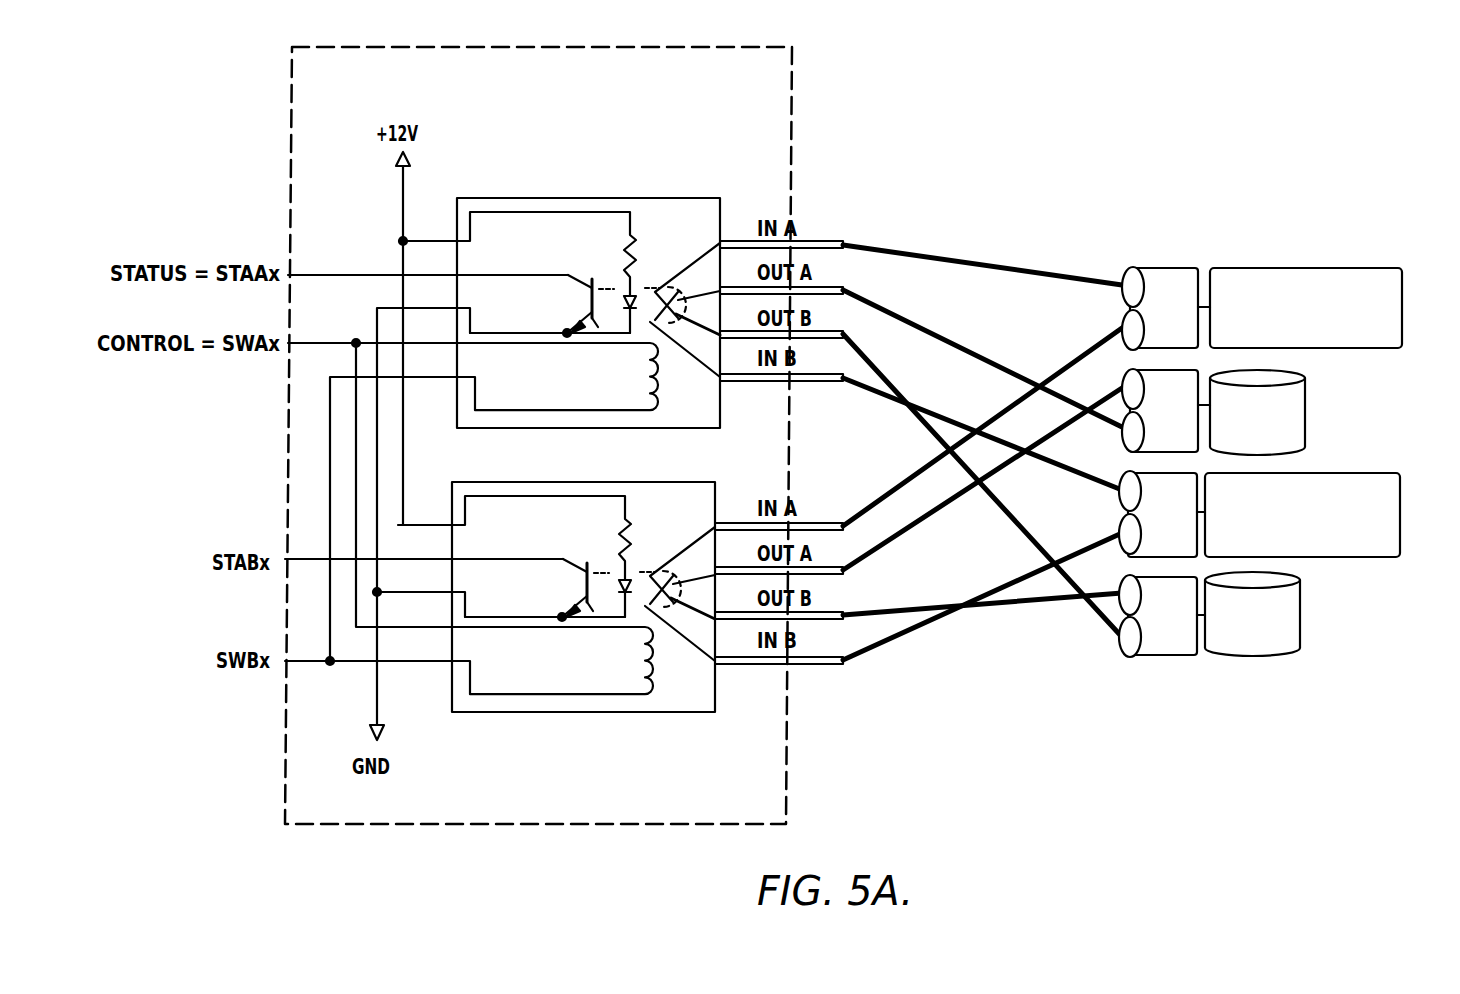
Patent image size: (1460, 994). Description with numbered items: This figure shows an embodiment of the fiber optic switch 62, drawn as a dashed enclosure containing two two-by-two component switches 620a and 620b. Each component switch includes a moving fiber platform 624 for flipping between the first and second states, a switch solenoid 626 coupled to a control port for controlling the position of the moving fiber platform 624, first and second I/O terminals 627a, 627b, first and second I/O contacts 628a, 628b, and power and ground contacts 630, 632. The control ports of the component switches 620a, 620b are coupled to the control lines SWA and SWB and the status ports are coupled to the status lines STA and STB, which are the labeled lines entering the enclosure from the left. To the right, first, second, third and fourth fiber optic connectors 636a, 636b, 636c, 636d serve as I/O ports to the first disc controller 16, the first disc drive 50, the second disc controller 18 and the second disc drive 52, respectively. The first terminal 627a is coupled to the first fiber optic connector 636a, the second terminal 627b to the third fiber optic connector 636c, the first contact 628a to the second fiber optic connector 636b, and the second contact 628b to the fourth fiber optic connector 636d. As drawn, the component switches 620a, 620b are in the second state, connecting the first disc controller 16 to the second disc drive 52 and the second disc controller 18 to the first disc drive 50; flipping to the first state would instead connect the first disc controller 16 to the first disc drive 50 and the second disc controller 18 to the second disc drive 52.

The fiber optic switch 62 is at (795, 130).
The first component switch 620a is at (545, 198).
The second component switch 620b is at (525, 483).
The power contact 630 is at (456, 238).
The ground contact 632 is at (460, 308).
The moving fiber platform 624 is at (603, 287).
The switch solenoid 626 is at (658, 396).
The first I/O terminal 627a is at (843, 243).
The first I/O contact 628a is at (845, 292).
The second I/O contact 628b is at (845, 335).
The second I/O terminal 627b is at (843, 383).
The first fiber optic connector 636a is at (1183, 268).
The second fiber optic connector 636b is at (1135, 452).
The third fiber optic connector 636c is at (1128, 516).
The fourth fiber optic connector 636d is at (1150, 656).
The first disc controller 16 is at (1378, 268).
The first disc drive 50 is at (1305, 405).
The second disc controller 18 is at (1400, 512).
The second disc drive 52 is at (1300, 613).